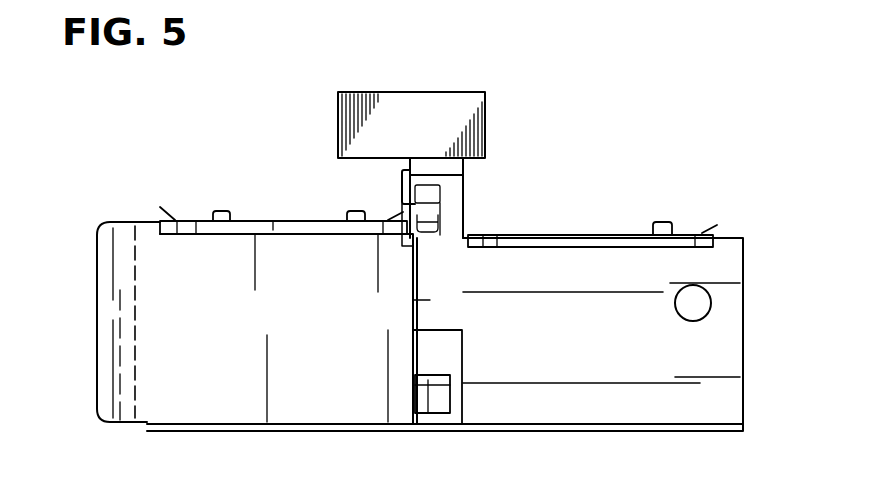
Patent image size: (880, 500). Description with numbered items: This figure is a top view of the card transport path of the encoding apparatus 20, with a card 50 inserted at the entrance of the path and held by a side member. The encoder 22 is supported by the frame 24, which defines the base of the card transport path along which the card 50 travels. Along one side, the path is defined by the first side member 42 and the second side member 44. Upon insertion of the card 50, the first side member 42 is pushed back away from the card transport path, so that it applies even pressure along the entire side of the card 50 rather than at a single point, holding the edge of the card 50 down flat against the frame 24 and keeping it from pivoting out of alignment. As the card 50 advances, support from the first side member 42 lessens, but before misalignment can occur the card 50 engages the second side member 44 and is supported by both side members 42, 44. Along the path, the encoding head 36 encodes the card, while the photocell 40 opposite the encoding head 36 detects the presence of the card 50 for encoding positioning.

The encoding apparatus 20 is at (570, 138).
The encoder 22 is at (410, 115).
The frame 24 is at (710, 400).
The encoding head 36 is at (442, 402).
The photocell 40 is at (437, 238).
The first side member 42 is at (298, 227).
The second side member 44 is at (600, 240).
The card 50 is at (112, 343).